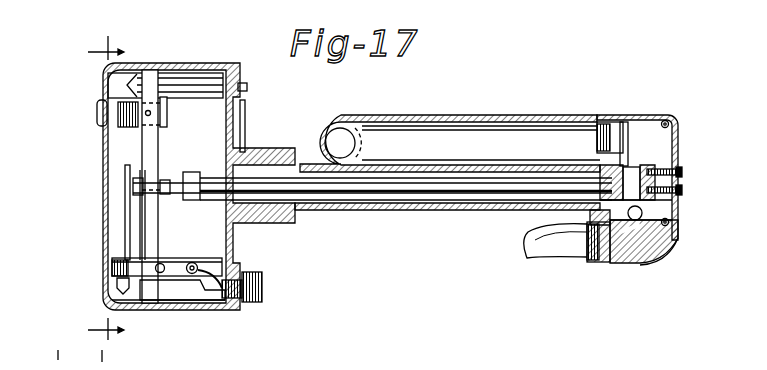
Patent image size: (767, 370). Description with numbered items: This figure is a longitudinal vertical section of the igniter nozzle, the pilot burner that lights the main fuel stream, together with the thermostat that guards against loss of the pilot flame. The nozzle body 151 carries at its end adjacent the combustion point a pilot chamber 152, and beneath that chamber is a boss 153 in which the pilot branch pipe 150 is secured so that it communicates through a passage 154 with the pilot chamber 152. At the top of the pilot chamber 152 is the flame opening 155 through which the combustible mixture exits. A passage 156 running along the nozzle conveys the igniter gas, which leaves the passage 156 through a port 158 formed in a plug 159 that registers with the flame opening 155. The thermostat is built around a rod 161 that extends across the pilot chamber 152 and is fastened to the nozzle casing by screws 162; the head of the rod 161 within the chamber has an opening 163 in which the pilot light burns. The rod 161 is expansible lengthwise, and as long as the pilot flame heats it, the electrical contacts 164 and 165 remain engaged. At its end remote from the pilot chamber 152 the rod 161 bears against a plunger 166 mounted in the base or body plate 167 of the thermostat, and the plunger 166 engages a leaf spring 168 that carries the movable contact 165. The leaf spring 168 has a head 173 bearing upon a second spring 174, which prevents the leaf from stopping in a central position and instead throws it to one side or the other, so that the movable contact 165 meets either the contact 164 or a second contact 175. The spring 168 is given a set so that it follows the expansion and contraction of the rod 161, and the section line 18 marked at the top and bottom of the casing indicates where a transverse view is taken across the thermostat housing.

The section line 18- 18 is at (91, 185).
The pilot branch pipe 150 is at (555, 258).
The nozzle body 151 is at (472, 207).
The pilot chamber 152 is at (657, 213).
The boss 153 is at (633, 256).
The passage 154 is at (660, 244).
The flame opening 155 is at (680, 140).
The passage 156 is at (433, 141).
The port 158 is at (625, 143).
The plug 159 is at (620, 133).
The rod 161 is at (383, 185).
The screws 162 is at (684, 190).
The opening 163 is at (603, 262).
The electrical contact 164 is at (115, 268).
The movable contact 165 is at (112, 283).
The plunger 166 is at (193, 185).
The base or body plate 167 is at (148, 212).
The leaf spring 168 is at (125, 193).
The head 173 is at (122, 303).
The second spring 174 is at (168, 305).
The second contact 175 is at (150, 278).